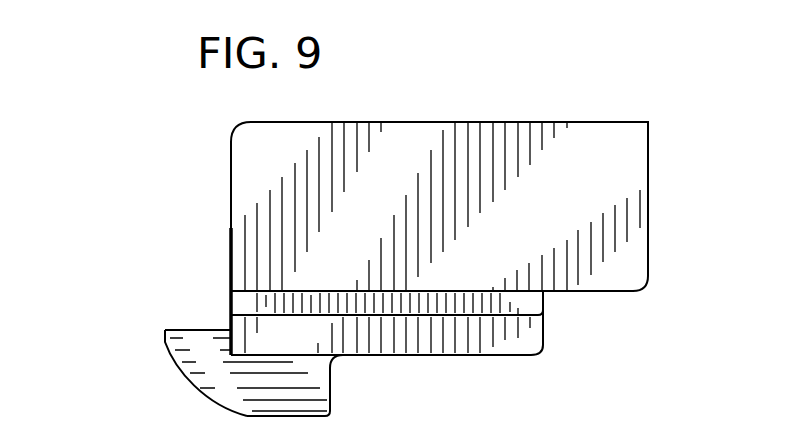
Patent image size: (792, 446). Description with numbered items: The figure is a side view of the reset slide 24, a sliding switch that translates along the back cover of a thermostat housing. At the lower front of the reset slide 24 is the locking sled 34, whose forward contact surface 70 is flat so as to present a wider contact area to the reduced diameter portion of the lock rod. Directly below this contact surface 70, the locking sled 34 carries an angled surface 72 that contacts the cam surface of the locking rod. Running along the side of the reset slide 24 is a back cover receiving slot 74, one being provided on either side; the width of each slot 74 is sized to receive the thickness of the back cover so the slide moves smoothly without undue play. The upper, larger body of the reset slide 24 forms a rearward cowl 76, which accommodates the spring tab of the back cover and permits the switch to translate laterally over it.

The reset slide 24 is at (420, 133).
The rearward cowl 76 is at (607, 181).
The back cover receiving slot 74 is at (240, 303).
The forward contact surface 70 is at (164, 337).
The angled surface 72 is at (173, 358).
The locking sled 34 is at (214, 387).